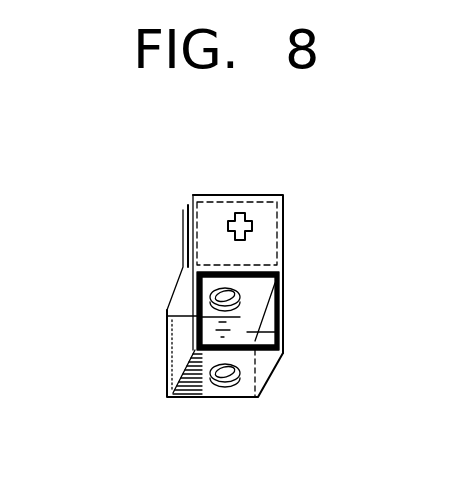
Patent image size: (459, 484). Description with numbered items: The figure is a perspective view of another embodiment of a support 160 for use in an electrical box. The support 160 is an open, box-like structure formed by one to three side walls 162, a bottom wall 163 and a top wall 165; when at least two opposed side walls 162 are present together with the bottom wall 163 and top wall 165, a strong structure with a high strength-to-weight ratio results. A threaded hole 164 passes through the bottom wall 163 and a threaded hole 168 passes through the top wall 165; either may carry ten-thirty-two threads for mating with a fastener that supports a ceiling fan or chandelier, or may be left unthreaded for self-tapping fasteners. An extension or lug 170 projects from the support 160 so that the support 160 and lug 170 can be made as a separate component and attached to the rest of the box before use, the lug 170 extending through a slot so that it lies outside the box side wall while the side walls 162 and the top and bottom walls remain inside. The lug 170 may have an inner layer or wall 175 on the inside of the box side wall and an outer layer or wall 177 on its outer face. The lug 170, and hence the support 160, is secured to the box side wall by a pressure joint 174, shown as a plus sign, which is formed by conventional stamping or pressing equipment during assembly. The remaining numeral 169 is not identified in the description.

The support 160 is at (165, 317).
The side wall 162 is at (170, 340).
The bottom wall 163 is at (188, 398).
The threaded hole 164 is at (228, 398).
The top wall 165 is at (258, 284).
The threaded hole 168 is at (235, 321).
The terminal contact 169 is at (247, 332).
The lug 170 is at (263, 212).
The pressure joint 174 is at (243, 213).
The inner layer or wall 175 is at (182, 242).
The outer layer or wall 177 is at (192, 202).